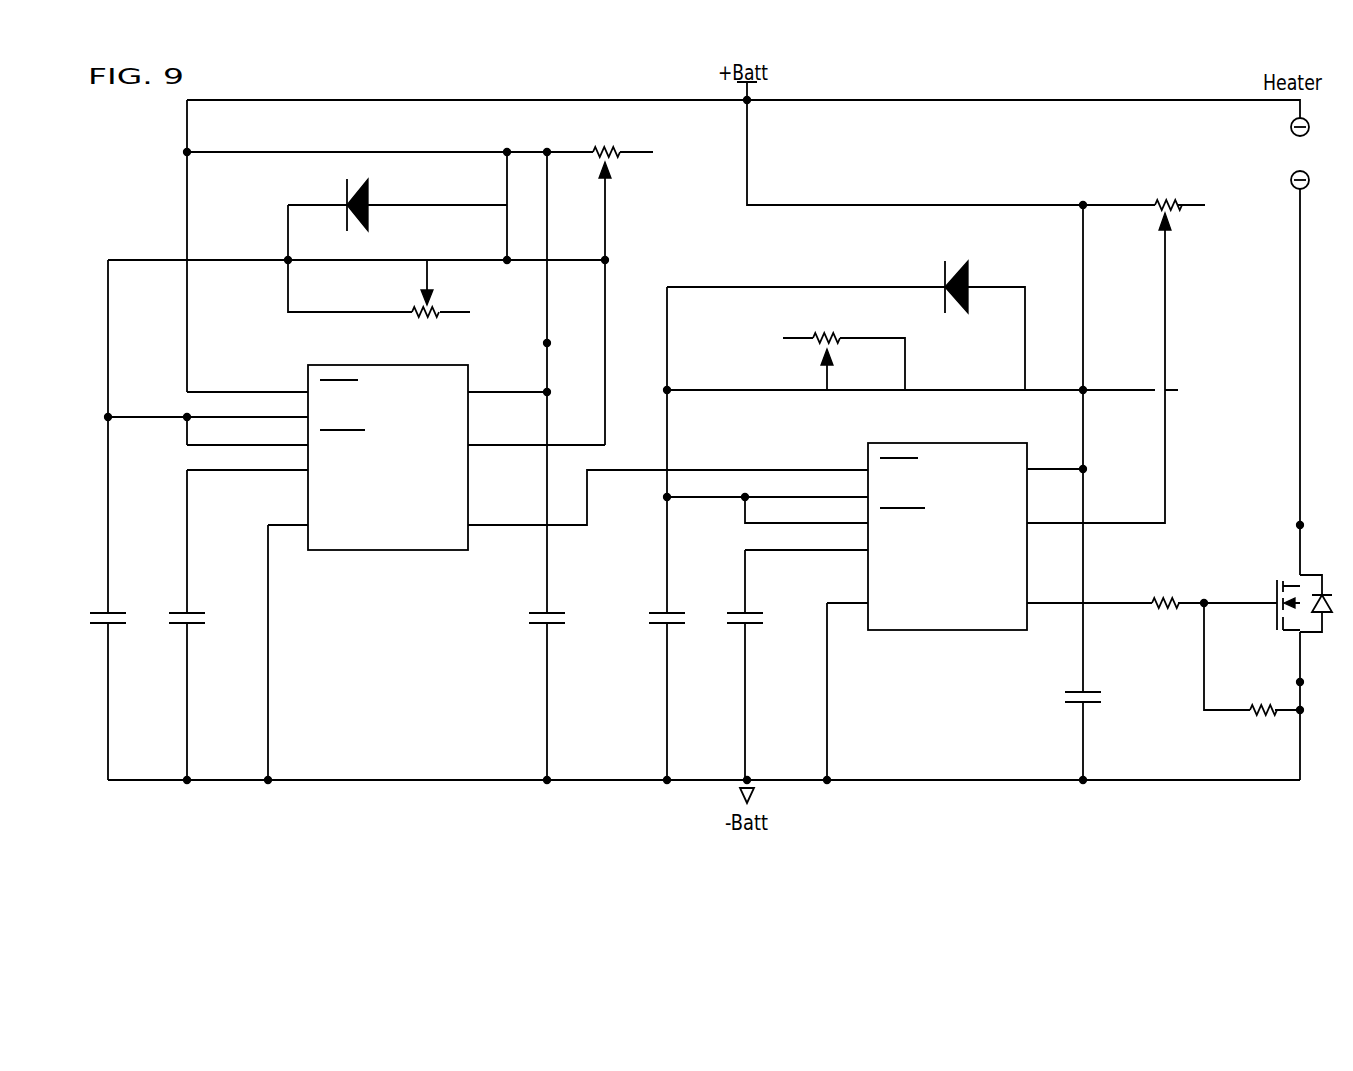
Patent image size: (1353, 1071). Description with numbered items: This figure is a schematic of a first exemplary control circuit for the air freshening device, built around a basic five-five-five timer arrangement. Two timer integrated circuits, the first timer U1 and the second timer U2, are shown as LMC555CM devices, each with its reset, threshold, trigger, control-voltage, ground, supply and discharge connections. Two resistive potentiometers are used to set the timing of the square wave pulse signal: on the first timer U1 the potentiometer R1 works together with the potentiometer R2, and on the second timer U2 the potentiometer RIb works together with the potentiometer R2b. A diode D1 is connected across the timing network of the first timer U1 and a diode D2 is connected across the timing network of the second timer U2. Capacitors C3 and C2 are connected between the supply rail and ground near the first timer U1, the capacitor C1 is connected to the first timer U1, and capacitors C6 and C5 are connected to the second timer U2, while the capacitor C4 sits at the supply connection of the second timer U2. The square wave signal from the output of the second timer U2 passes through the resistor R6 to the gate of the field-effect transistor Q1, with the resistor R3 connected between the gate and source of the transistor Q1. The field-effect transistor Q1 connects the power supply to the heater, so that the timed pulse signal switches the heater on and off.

The timer IC LMC555CM U1 is at (389, 459).
The timer IC LMC555CM U2 is at (943, 539).
The diode D1 is at (355, 220).
The diode D2 is at (955, 301).
The potentiometer 2M R1 is at (431, 290).
The potentiometer 250K R2 is at (634, 191).
The potentiometer 20K R2b is at (1185, 199).
The potentiometer 20K RIb is at (828, 365).
The resistor 200 R6 is at (1162, 620).
The resistor 100K R3 is at (1262, 722).
The capacitor 0.1uF C1 is at (572, 643).
The capacitor 0.1uF C2 is at (212, 643).
The capacitor 100uF C3 is at (133, 643).
The capacitor 0.1uF C4 is at (1108, 722).
The capacitor 0.1uF C5 is at (771, 643).
The capacitor 2.2uF C6 is at (691, 643).
The MOSFET SI4876DY Q1 is at (1262, 589).